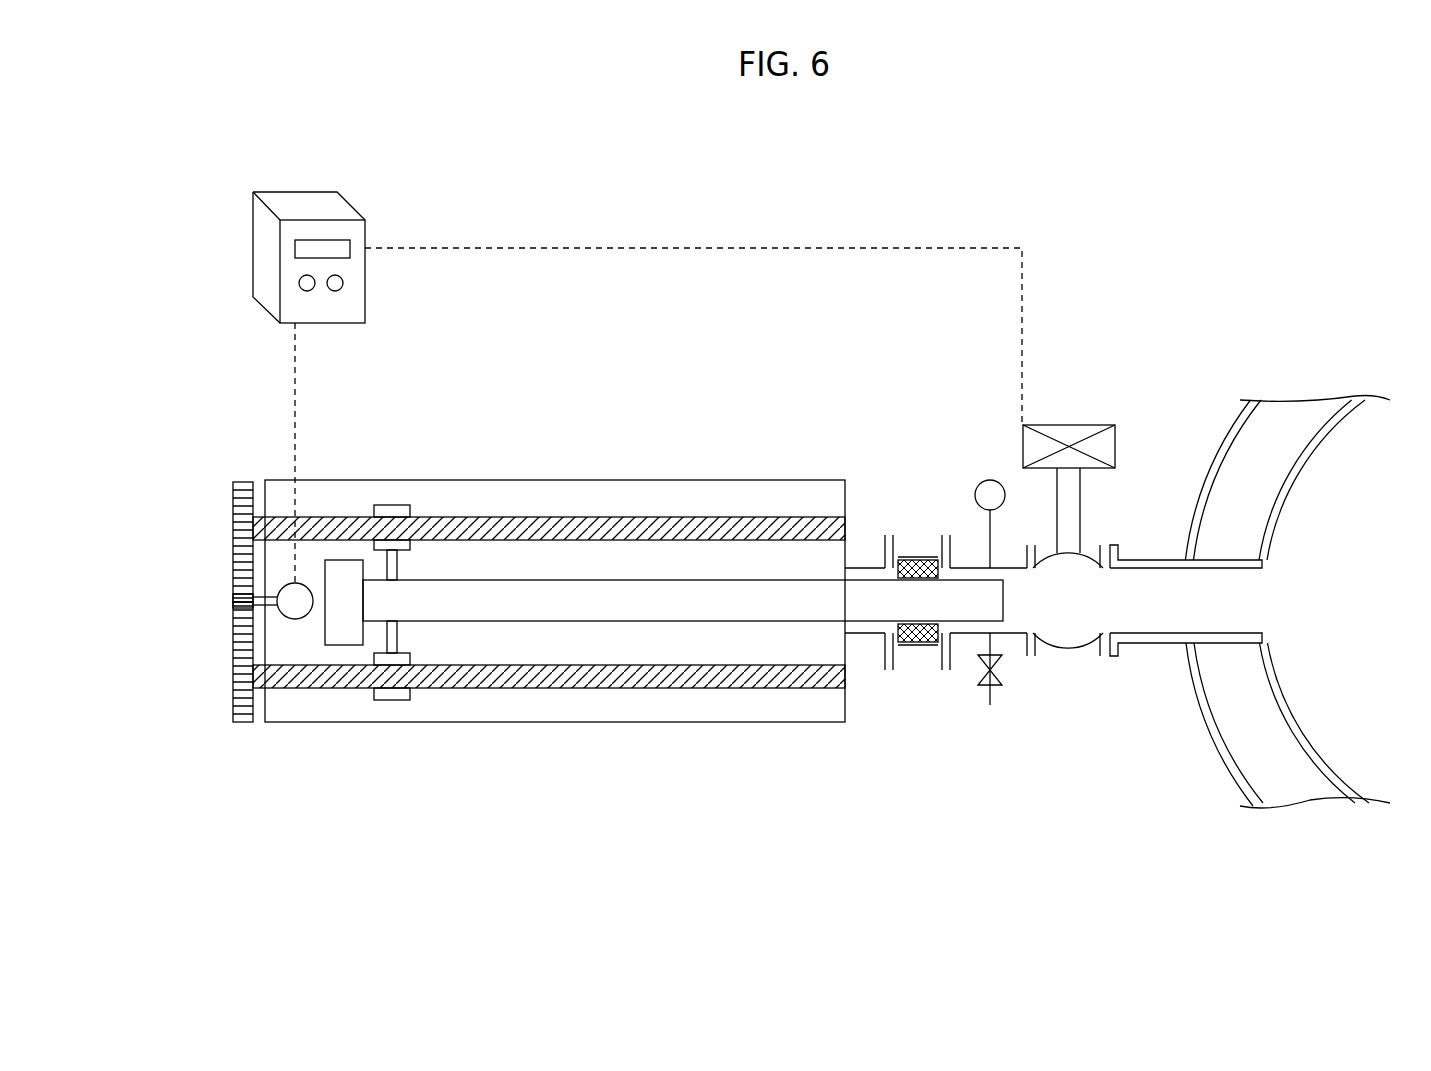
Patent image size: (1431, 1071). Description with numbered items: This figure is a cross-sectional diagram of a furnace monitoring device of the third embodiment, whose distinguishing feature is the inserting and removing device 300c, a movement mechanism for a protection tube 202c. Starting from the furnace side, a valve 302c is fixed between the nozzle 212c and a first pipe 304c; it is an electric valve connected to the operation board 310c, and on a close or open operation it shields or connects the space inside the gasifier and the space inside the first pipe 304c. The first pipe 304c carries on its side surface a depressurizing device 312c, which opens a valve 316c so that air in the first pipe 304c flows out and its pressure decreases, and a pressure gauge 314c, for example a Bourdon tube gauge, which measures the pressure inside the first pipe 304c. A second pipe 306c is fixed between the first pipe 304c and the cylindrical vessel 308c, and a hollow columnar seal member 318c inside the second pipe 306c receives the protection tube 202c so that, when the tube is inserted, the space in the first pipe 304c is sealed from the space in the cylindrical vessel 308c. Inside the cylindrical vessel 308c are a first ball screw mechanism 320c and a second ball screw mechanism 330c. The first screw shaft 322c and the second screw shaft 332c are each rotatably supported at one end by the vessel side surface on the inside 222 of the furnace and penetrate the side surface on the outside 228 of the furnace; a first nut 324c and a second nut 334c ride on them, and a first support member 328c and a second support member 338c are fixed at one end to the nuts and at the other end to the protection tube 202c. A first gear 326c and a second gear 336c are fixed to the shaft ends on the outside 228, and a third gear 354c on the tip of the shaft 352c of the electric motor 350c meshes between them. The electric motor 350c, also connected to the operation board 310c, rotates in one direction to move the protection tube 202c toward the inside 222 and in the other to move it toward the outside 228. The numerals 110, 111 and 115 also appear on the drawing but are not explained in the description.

The operation board 310c is at (293, 192).
The cylindrical vessel 308c is at (752, 480).
The first ball screw mechanism 320c is at (617, 383).
The first gear 326c is at (255, 480).
The first nut 324c is at (392, 505).
The first screw shaft 322c is at (485, 517).
The first support member 328c is at (400, 565).
The second ball screw mechanism 330c is at (545, 852).
The second gear 336c is at (243, 722).
The second nut 334c is at (392, 700).
The second screw shaft 332c is at (450, 688).
The second support member 338c is at (400, 640).
The electric motor 350c is at (290, 618).
The shaft 352c is at (263, 597).
The third gear 354c is at (253, 597).
The protection tube 202c is at (732, 621).
The first pipe 304c is at (968, 560).
The second pipe 306c is at (908, 557).
The seal member 318c is at (912, 645).
The pressure gauge 314c is at (988, 480).
The valve 316c is at (987, 690).
The depressurizing device 312c is at (1003, 642).
The valve 302c is at (1072, 425).
The nozzle 212c is at (1120, 553).
The chamber outer wall 110 is at (1229, 432).
The chamber inner wall 111 is at (1302, 468).
The chamber top 115 is at (1287, 400).
The inside of the furnace 222 is at (1430, 619).
The outside of the furnace 228 is at (113, 638).
The inserting and removing device 300c is at (766, 846).